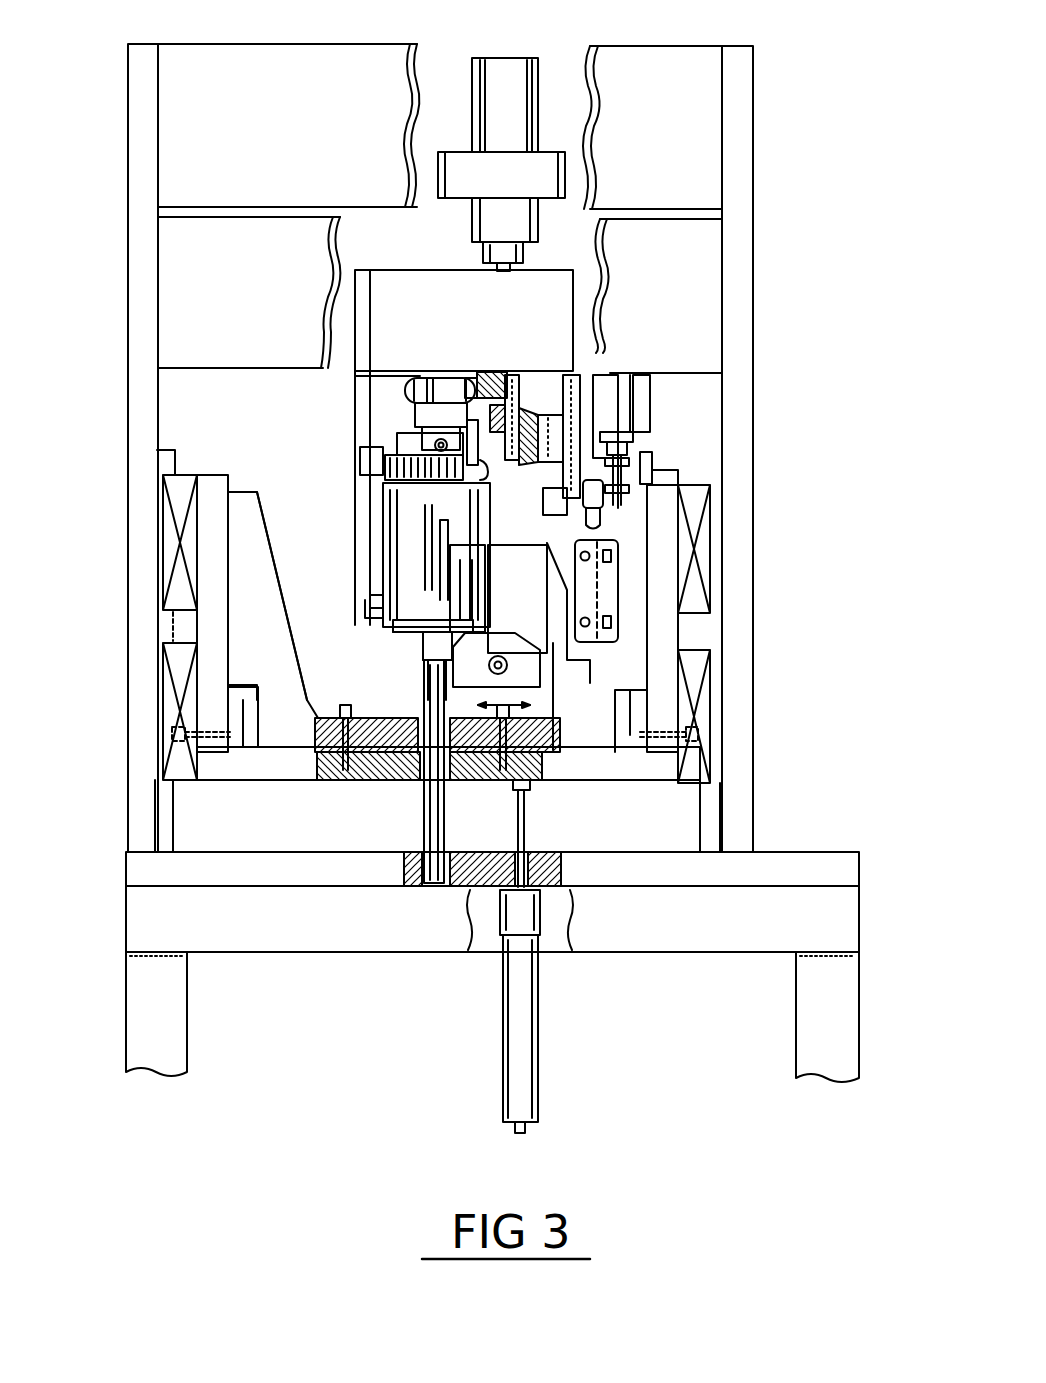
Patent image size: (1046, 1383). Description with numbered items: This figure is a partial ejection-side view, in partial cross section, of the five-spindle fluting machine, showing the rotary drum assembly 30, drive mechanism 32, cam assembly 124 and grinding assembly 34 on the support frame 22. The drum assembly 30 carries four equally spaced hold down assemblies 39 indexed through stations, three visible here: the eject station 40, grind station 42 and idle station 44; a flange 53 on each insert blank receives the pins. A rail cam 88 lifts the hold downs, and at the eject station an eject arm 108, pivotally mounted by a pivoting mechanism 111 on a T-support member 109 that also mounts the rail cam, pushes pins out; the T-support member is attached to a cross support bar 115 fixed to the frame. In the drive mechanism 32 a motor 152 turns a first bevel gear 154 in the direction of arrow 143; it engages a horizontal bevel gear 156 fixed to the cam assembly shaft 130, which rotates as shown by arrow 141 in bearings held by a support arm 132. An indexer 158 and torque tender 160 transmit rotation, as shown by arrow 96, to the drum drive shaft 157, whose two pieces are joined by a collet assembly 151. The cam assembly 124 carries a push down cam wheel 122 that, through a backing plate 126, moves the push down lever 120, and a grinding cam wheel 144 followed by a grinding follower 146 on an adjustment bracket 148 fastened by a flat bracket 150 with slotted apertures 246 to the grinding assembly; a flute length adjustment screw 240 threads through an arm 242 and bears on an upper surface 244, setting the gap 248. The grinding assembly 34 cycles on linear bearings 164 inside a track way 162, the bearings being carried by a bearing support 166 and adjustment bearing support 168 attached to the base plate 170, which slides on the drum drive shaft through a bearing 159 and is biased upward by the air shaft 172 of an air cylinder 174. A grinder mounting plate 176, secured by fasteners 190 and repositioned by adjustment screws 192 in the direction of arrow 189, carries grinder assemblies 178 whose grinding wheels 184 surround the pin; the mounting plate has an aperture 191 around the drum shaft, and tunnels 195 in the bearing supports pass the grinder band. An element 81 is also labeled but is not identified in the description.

The support frame 22 is at (738, 278).
The rotary drum assembly 30 is at (338, 483).
The drive mechanism 32 is at (628, 140).
The grinding assembly 34 is at (220, 840).
The hold down assemblies 39 is at (410, 532).
The eject station 40 is at (435, 630).
The grind station 42 is at (479, 606).
The idle station 44 is at (383, 599).
The flange 53 is at (430, 633).
The cylinder body 81 is at (384, 576).
The rail cam 88 is at (364, 454).
The arrow 96 is at (405, 402).
The eject arm 108 is at (383, 615).
The T-support member 109 is at (418, 562).
The pivoting mechanism 111 is at (375, 612).
The cross support bar 115 is at (178, 297).
The push down lever 120 is at (486, 464).
The push down cam wheel 122 is at (583, 400).
The cam assembly 124 is at (560, 445).
The backing plate 126 is at (448, 302).
The cam assembly shaft 130 is at (600, 373).
The support arm 132 is at (518, 375).
The arrow 141 is at (610, 436).
The arrow 143 is at (476, 378).
The grinding cam wheel 144 is at (540, 394).
The grinding follower 146 is at (596, 514).
The adjustment bracket 148 is at (544, 546).
The flat bracket 150 is at (788, 626).
The collet assembly 151 is at (415, 418).
The motor 152 is at (500, 75).
The first bevel gear 154 is at (499, 380).
The horizontal bevel gear 156 is at (548, 500).
The drum drive shaft 157 is at (440, 370).
The indexer 158 is at (443, 292).
The bearing 159 is at (418, 766).
The torque tender 160 is at (530, 218).
The track way 162 is at (164, 452).
The linear bearings 164 is at (178, 585).
The bearing support 166 is at (160, 632).
The adjustment bearing support 168 is at (660, 520).
The grinding assembly base plate 170 is at (310, 770).
The air shaft 172 is at (526, 838).
The air cylinder 174 is at (525, 1011).
The grinder mounting plate 176 is at (628, 745).
The grinder assemblies 178 is at (580, 642).
The grinding wheels 184 is at (452, 798).
The arrow 189 is at (463, 765).
The fasteners 190 is at (425, 694).
The aperture 191 is at (345, 841).
The adjustment screws 192 is at (172, 738).
The tunnels 195 is at (242, 700).
The flute length adjustment screw 240 is at (625, 457).
The arm 242 is at (623, 488).
The upper surface 244 is at (684, 470).
The slotted apertures 246 is at (612, 557).
The gap 248 is at (676, 483).